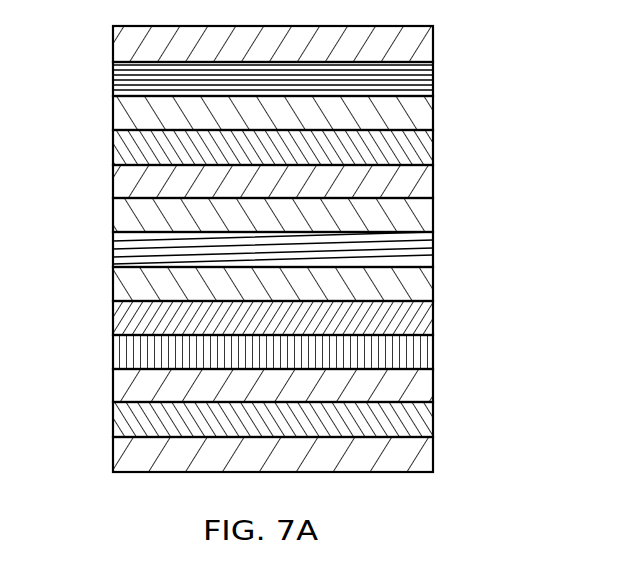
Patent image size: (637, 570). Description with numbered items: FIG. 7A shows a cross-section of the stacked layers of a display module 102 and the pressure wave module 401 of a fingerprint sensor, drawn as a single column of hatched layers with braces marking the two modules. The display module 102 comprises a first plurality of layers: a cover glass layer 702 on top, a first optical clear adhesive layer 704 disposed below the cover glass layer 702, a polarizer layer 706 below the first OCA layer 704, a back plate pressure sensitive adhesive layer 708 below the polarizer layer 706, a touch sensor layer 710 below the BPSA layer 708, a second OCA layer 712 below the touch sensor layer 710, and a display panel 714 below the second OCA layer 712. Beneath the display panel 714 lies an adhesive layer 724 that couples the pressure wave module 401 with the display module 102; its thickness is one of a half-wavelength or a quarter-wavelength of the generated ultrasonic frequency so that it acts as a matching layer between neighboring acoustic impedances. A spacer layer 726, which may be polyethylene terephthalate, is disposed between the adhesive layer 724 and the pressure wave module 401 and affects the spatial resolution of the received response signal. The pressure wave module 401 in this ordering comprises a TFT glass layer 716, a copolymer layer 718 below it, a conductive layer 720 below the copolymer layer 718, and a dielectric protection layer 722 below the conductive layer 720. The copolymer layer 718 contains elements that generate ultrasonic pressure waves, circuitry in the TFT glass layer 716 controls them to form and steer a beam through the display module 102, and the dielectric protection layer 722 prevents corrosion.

The display module 102 is at (274, 143).
The pressure wave module 401 is at (274, 398).
The cover glass layer 702 is at (433, 48).
The first optical clear adhesive (OCA) layer 704 is at (433, 77).
The polarizer layer 706 is at (433, 110).
The back plate pressure sensitive adhesive (BPSA) layer 708 is at (433, 143).
The touch sensor layer 710 is at (433, 173).
The second OCA layer 712 is at (433, 213).
The display panel 714 is at (433, 252).
The adhesive layer 724 is at (433, 283).
The spacer layer 726 is at (433, 317).
The thin film transistor (TFT) glass layer 716 is at (433, 352).
The copolymer layer 718 is at (433, 382).
The conductive layer 720 is at (433, 418).
The dielectric protection layer 722 is at (433, 457).